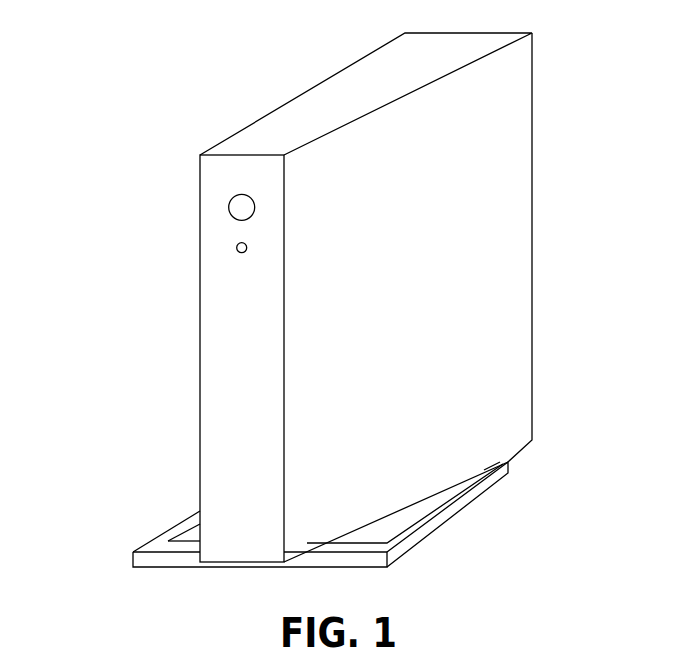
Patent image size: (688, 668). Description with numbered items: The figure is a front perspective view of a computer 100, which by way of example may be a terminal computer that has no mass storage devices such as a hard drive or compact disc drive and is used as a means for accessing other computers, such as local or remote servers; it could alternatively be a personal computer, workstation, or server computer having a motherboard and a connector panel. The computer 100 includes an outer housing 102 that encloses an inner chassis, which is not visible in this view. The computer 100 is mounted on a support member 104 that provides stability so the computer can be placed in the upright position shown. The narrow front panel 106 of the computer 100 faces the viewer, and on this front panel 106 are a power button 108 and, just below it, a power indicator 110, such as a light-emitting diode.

The computer 100 is at (138, 43).
The outer housing 102 is at (518, 163).
The support member 104 is at (480, 492).
The front panel 106 is at (222, 170).
The power button 108 is at (240, 217).
The power indicator 110 is at (242, 253).